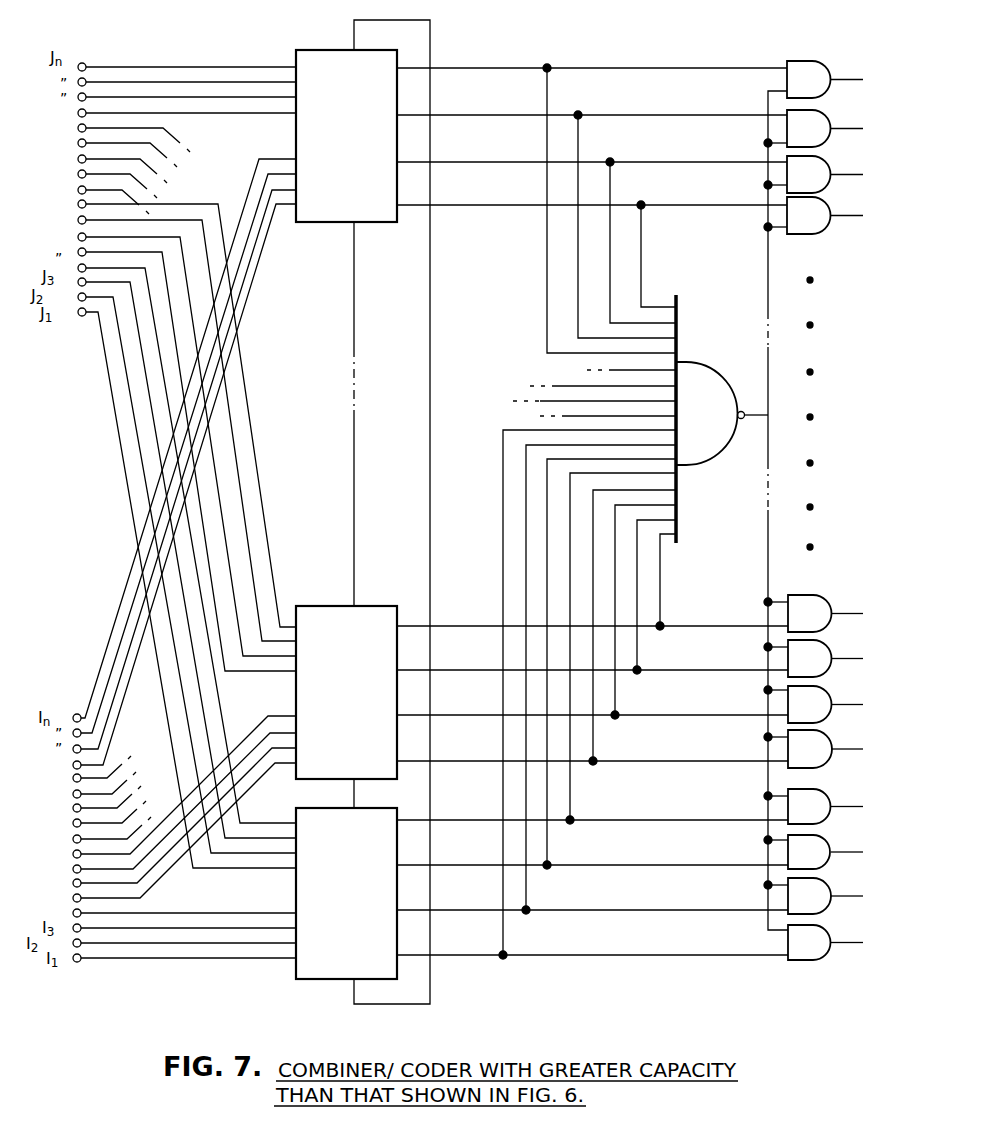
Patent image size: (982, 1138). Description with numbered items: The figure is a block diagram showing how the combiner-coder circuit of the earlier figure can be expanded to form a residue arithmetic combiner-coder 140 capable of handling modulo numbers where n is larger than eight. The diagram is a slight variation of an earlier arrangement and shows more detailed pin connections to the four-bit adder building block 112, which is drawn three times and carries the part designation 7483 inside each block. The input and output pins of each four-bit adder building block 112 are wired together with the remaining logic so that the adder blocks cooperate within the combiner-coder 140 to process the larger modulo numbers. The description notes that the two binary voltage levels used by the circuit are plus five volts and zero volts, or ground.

The four-bit adder building block 112 is at (343, 529).
The four-bit binary full adder integrated circuit type designation 7483 is at (321, 995).
The residue arithmetic combiner-coder 140 is at (612, 40).